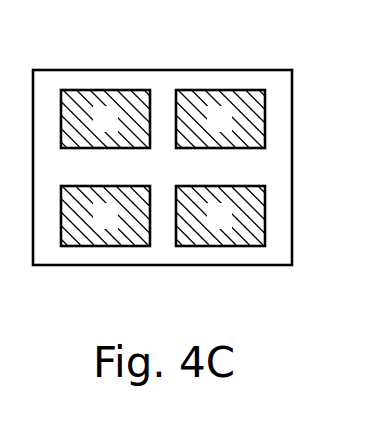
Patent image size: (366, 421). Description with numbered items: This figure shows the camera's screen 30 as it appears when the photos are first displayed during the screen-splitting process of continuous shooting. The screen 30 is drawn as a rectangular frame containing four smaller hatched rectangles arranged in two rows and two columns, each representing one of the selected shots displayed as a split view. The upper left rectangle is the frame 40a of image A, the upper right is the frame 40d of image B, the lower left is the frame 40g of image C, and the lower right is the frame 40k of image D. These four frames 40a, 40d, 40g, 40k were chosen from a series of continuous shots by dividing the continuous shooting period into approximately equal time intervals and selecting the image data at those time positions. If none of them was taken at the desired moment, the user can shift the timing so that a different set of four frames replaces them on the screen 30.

The screen 30 is at (292, 168).
The frame of image A 40a is at (102, 88).
The frame of image B 40d is at (215, 88).
The frame of image C 40g is at (108, 247).
The frame of image D 40k is at (222, 247).